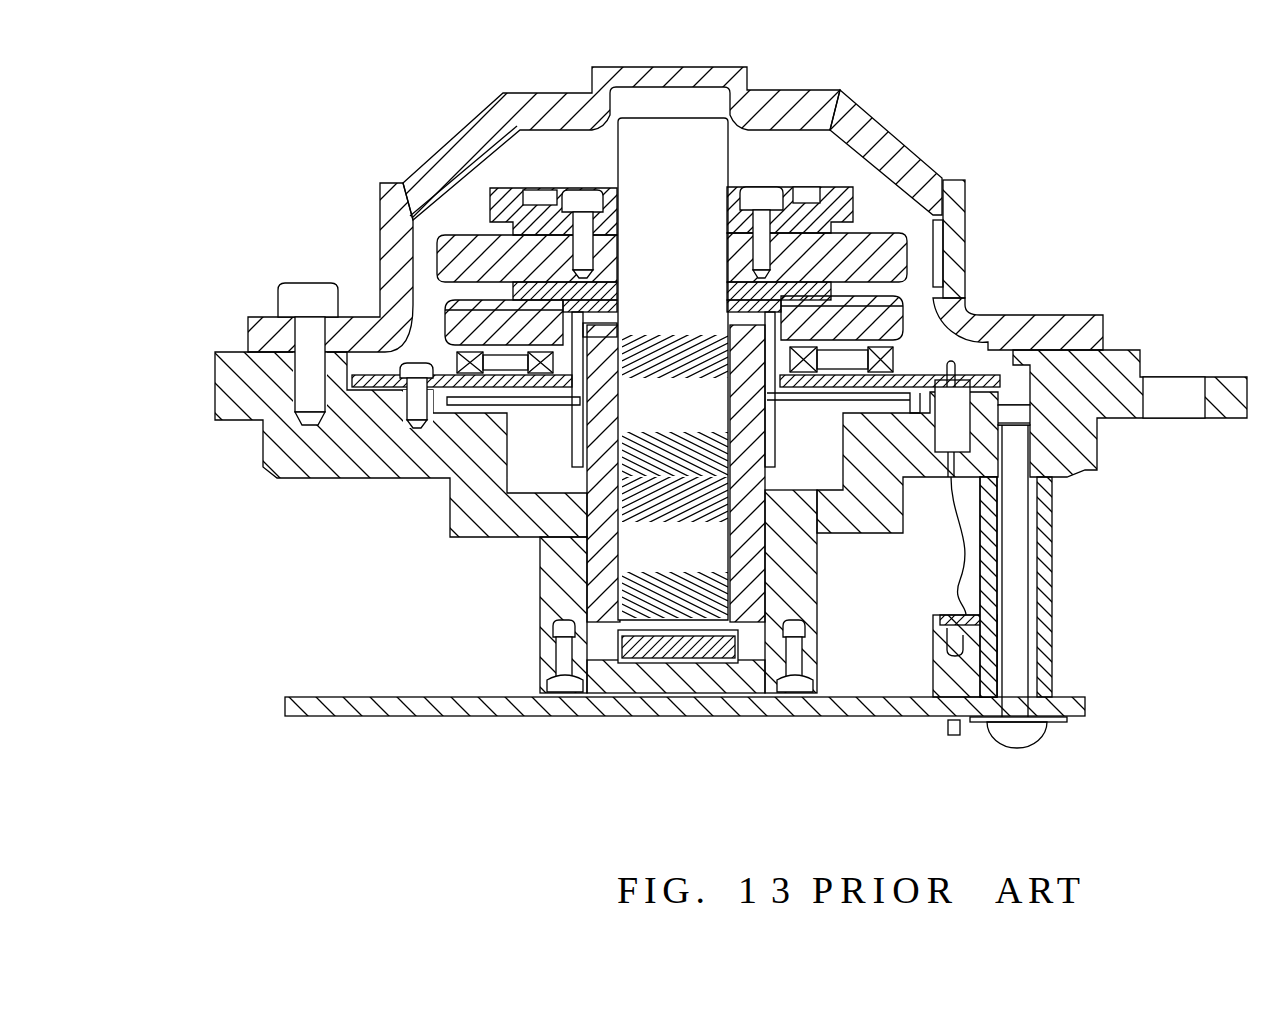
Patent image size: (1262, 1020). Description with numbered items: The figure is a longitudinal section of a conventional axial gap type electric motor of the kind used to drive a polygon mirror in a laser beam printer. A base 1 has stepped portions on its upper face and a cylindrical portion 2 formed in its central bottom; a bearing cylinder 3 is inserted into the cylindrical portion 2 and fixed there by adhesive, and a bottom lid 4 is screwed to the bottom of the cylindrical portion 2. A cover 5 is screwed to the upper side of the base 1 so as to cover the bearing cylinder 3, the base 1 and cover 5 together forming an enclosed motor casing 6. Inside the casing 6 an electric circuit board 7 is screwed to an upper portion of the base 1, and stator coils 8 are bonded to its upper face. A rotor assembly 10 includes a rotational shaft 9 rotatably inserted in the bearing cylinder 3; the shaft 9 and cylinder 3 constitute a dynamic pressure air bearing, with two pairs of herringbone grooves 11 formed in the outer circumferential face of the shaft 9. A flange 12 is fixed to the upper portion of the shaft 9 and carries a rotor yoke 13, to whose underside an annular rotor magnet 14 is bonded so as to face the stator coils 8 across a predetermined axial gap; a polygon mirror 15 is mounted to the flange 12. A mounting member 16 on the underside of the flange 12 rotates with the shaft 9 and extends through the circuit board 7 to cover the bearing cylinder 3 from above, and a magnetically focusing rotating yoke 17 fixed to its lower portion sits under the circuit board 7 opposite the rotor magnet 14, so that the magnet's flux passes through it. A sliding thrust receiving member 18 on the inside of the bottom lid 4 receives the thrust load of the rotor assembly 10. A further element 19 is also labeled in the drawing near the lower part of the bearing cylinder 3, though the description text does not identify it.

The base 1 is at (302, 480).
The cylindrical portion 2 is at (547, 600).
The bearing cylinder 3 is at (760, 553).
The bottom lid 4 is at (643, 697).
The cover 5 is at (478, 118).
The motor casing 6 is at (218, 338).
The electric circuit board 7 is at (360, 315).
The stator coils 8 is at (375, 318).
The rotational shaft 9 is at (763, 175).
The rotor assembly 10 is at (842, 92).
The herringbone grooves 11 is at (662, 333).
The flange 12 is at (643, 277).
The rotor yoke 13 is at (432, 325).
The rotor magnet 14 is at (453, 320).
The polygon mirror 15 is at (893, 243).
The mounting member 16 is at (637, 323).
The rotating yoke 17 is at (470, 412).
The sliding thrust receiving member 18 is at (687, 660).
The bracket wall 19 is at (813, 612).